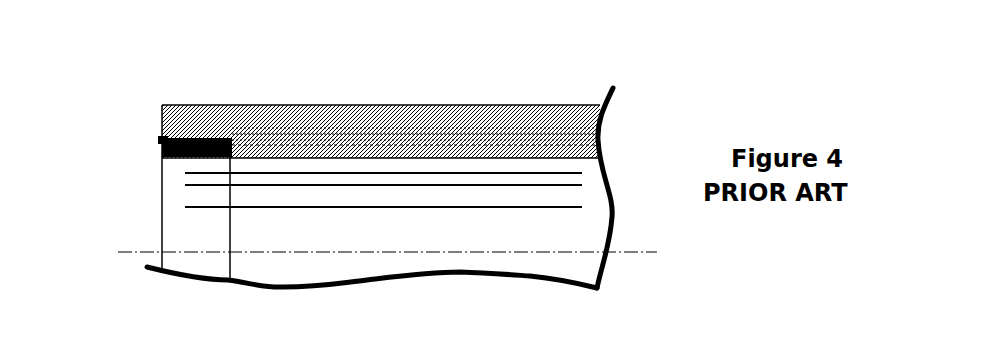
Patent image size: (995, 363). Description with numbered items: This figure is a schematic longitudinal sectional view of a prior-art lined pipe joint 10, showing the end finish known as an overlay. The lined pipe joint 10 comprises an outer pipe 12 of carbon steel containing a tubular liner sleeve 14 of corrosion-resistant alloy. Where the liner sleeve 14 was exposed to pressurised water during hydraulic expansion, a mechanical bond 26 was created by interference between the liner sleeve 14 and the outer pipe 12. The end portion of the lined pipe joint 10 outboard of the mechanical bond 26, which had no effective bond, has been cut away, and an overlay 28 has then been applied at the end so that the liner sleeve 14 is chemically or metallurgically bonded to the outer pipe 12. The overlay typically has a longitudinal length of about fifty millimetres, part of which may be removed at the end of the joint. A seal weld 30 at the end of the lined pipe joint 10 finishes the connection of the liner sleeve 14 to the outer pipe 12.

The lined pipe joint 10 is at (120, 68).
The outer pipe 12 is at (283, 115).
The liner sleeve 14 is at (503, 150).
The mechanical bond 26 is at (392, 132).
The overlay 28 is at (180, 152).
The seal weld 30 is at (160, 140).